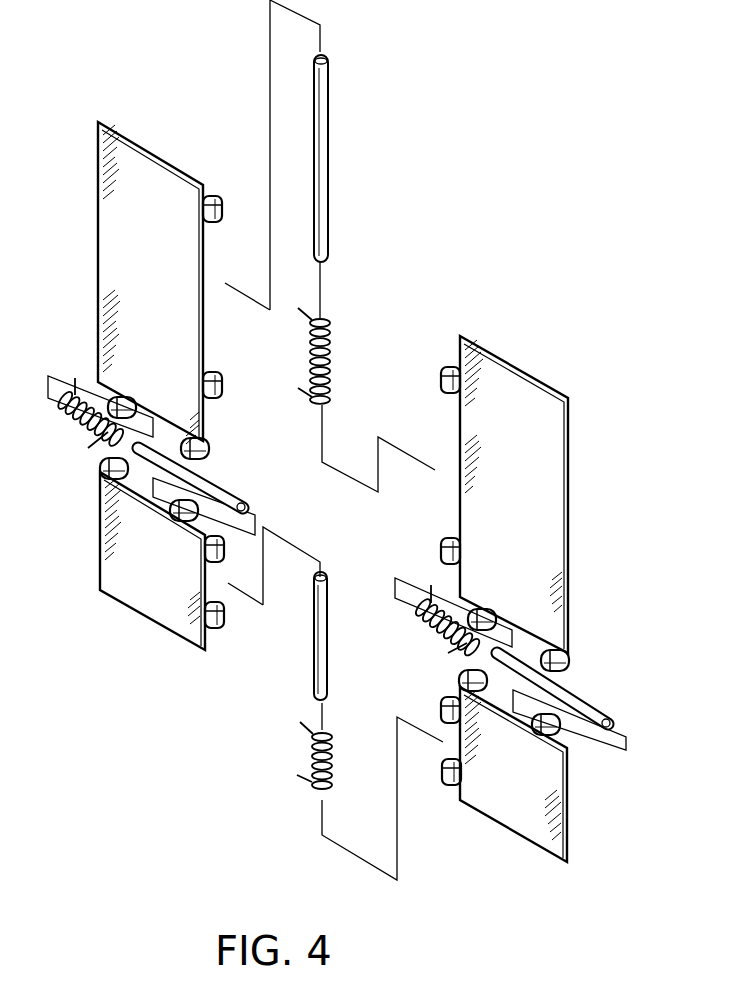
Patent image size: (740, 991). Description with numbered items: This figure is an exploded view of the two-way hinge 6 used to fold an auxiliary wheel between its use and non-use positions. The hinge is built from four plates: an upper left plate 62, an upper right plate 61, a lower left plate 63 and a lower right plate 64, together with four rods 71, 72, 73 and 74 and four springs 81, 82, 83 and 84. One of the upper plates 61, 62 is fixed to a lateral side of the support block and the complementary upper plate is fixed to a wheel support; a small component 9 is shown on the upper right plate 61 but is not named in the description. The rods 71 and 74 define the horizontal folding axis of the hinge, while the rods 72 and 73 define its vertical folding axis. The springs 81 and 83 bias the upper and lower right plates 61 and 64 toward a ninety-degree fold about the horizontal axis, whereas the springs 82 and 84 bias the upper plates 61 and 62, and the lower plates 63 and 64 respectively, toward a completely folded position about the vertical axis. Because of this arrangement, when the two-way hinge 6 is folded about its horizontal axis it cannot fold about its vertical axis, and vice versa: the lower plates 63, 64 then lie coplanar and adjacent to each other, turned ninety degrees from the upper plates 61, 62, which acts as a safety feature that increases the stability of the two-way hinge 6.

The two-way hinge 6 is at (462, 287).
The hinge 9 is at (445, 383).
The upper right plate 61 is at (563, 493).
The upper left plate 62 is at (103, 284).
The lower left plate 63 is at (118, 598).
The lower right plate 64 is at (510, 820).
The rod 71 is at (587, 705).
The rod 72 is at (328, 668).
The rod 73 is at (330, 160).
The rod 74 is at (232, 500).
The spring 81 is at (435, 633).
The spring 82 is at (332, 360).
The spring 83 is at (72, 412).
The spring 84 is at (333, 770).